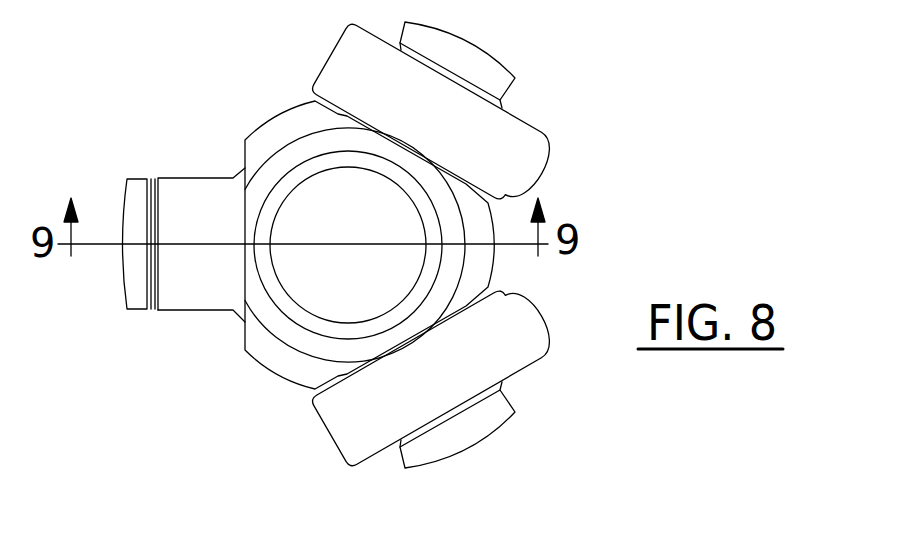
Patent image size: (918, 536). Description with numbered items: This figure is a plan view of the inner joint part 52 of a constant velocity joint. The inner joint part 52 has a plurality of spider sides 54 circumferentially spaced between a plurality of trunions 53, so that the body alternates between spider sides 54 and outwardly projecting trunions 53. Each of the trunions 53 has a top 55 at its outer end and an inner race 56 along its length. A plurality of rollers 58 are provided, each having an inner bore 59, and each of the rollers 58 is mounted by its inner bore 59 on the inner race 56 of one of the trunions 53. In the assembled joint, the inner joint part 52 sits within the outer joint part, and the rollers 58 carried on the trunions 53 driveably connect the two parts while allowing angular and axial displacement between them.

The inner joint part 52 is at (657, 88).
The trunion 53 is at (198, 188).
The spider side 54 is at (277, 113).
The top 55 is at (120, 290).
The inner race 56 is at (205, 313).
The roller 58 is at (527, 138).
The inner bore 59 is at (507, 102).